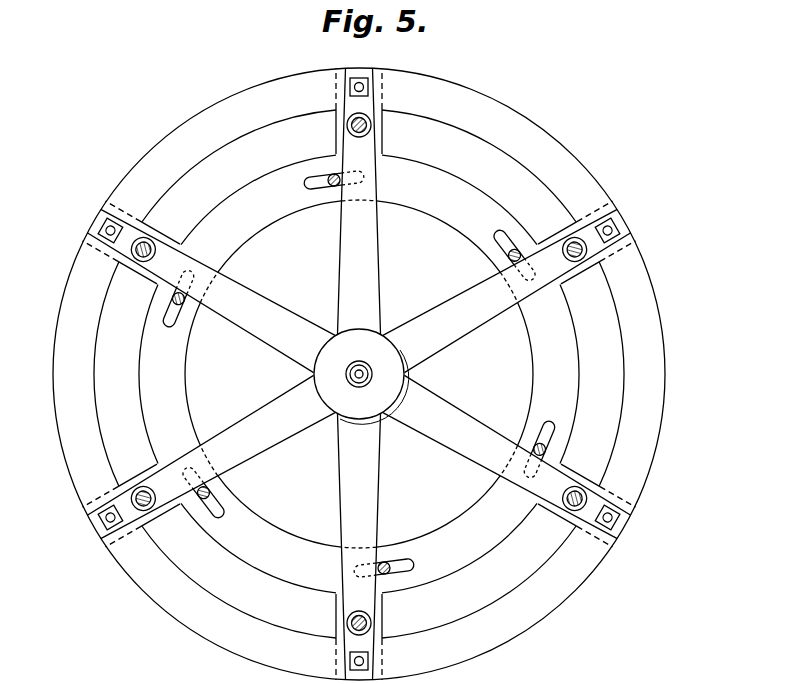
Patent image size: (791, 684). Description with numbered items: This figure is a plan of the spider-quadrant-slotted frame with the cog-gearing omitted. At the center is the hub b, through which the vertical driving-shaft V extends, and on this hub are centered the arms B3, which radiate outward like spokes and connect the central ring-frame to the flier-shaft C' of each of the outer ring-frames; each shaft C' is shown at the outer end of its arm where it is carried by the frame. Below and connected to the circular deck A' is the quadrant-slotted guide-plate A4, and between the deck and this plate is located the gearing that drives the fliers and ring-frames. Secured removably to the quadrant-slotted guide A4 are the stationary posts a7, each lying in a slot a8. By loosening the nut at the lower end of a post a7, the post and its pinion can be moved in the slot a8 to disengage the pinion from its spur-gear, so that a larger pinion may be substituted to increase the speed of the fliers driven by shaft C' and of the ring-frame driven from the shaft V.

The circular deck A' is at (363, 374).
The quadrant-slotted guide-plate A4 is at (359, 374).
The arms B3 is at (378, 273).
The flier-shaft C' is at (359, 374).
The post a7 is at (334, 187).
The slot a8 is at (310, 181).
The hub b is at (316, 375).
The vertical driving-shaft V is at (375, 373).